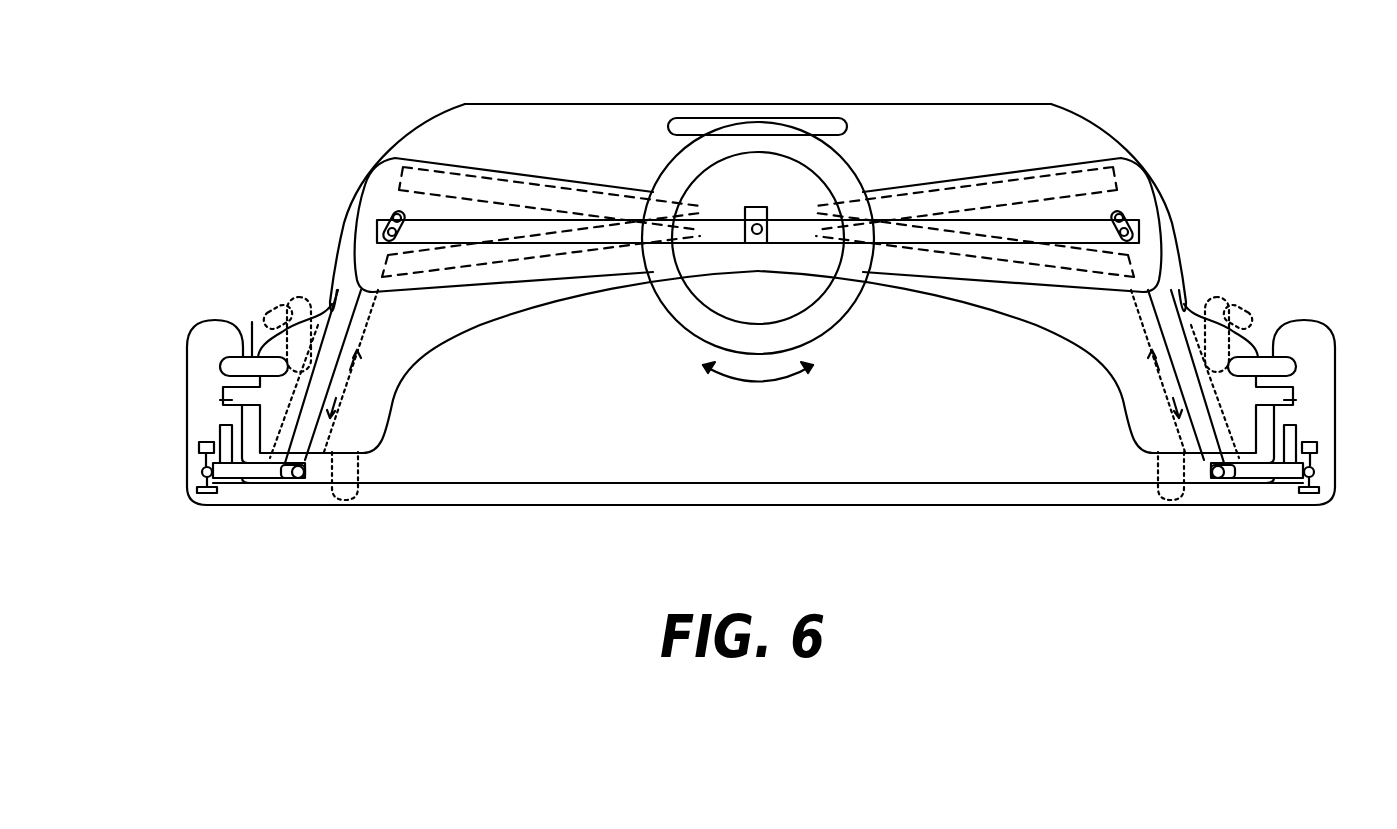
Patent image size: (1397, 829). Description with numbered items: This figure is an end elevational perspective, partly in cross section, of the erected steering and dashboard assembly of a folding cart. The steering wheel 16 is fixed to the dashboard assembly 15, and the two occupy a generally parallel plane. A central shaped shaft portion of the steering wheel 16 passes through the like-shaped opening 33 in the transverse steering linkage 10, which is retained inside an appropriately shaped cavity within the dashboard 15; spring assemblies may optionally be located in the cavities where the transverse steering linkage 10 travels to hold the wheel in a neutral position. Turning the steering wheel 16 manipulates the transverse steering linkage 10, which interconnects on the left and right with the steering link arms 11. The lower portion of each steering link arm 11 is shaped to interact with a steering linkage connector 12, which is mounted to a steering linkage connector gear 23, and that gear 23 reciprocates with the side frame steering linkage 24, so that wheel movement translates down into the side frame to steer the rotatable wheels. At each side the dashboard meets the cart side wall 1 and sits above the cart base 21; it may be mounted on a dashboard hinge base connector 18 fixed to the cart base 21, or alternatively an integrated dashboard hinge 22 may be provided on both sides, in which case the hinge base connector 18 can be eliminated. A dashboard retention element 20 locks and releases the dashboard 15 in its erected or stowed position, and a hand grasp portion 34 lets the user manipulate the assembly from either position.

The cart side wall 1 is at (218, 345).
The transverse steering linkage 10 is at (377, 230).
The steering link arms 11 is at (336, 330).
The steering linkage connector 12 is at (260, 470).
The dashboard assembly 15 is at (487, 136).
The steering wheel 16 is at (675, 170).
The dashboard hinge base connector 18 is at (358, 465).
The dashboard retention element 20 is at (253, 355).
The cart base 21 is at (903, 492).
The integrated dashboard hinge 22 is at (232, 401).
The steering linkage connector gear 23 is at (198, 450).
The side frame steering linkage 24 is at (218, 436).
The shaped opening 33 is at (767, 228).
The hand grasp portion 34 is at (820, 122).